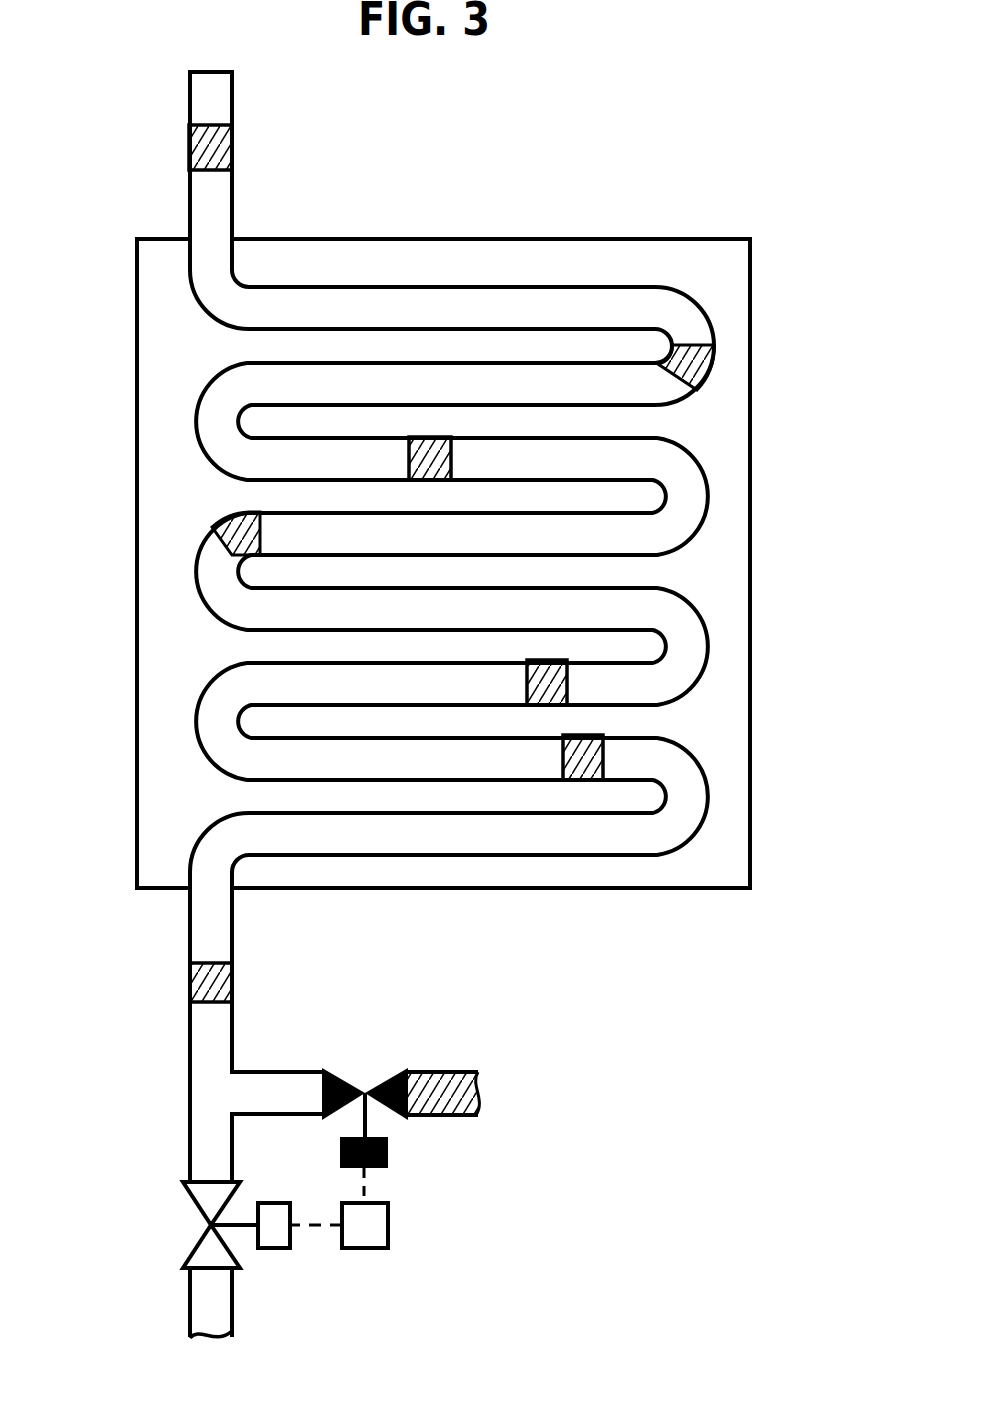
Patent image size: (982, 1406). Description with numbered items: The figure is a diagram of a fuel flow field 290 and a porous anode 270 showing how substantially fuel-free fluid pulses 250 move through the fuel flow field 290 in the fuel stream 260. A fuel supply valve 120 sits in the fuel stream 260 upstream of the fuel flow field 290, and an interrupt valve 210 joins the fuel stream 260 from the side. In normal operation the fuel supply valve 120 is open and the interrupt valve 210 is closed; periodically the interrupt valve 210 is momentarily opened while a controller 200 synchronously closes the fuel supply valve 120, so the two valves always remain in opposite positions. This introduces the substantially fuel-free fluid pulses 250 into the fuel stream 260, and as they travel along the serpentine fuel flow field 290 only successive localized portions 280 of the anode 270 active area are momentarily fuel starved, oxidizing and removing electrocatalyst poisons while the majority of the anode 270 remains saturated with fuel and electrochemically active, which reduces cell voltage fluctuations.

The fuel supply valve 120 is at (208, 1192).
The controller 200 is at (375, 1228).
The interrupt valve 210 is at (385, 1080).
The substantially fuel-free fluid pulses 250 is at (708, 367).
The fuel stream 260 is at (212, 1030).
The porous anode 270 is at (713, 727).
The localized portions 280 is at (715, 405).
The fuel flow field 290 is at (412, 308).